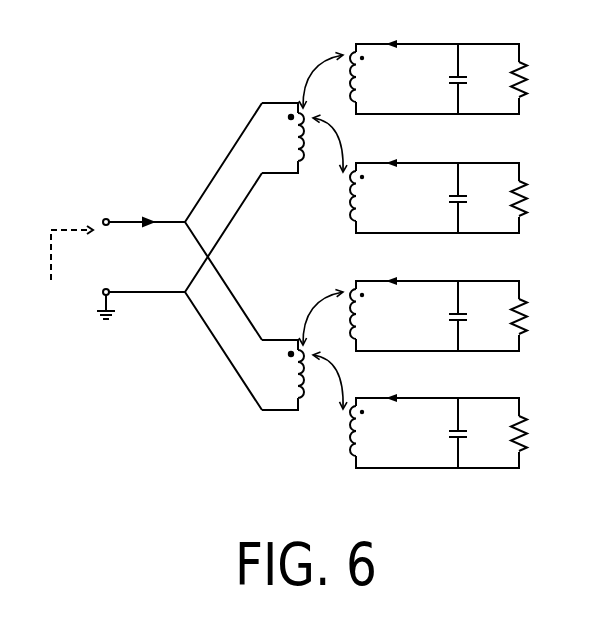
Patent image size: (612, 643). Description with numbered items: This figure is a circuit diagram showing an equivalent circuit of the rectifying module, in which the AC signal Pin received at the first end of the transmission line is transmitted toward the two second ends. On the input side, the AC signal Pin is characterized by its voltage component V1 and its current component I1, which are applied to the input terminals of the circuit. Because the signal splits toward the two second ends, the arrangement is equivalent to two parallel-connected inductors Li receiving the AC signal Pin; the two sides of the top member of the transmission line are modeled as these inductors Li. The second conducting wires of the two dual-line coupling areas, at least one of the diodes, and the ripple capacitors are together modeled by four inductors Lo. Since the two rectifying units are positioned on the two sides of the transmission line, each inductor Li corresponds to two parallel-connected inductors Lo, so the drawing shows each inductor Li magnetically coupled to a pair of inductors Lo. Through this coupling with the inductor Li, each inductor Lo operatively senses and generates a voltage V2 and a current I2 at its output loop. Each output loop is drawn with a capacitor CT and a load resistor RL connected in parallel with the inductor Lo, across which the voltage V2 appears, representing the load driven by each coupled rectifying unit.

The AC signal Pin is at (63, 271).
The current component I1 is at (147, 208).
The voltage component V1 is at (141, 269).
The inductor Li is at (283, 256).
The inductor Lo is at (370, 254).
The current I2 is at (392, 206).
The voltage V2 is at (422, 258).
The tuning capacitor CT is at (472, 257).
The load resistor RL is at (534, 256).